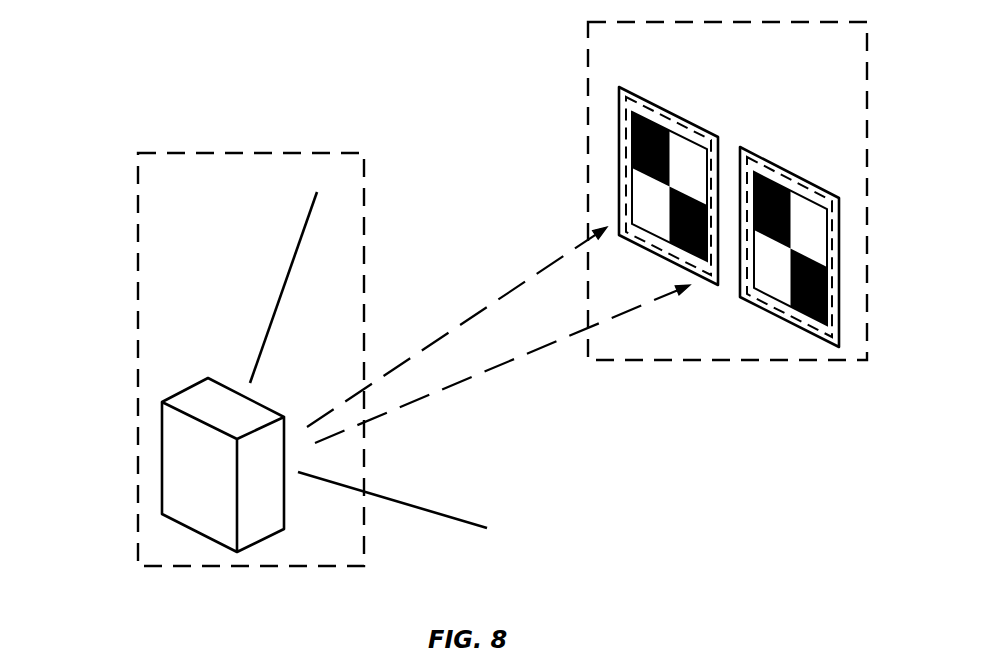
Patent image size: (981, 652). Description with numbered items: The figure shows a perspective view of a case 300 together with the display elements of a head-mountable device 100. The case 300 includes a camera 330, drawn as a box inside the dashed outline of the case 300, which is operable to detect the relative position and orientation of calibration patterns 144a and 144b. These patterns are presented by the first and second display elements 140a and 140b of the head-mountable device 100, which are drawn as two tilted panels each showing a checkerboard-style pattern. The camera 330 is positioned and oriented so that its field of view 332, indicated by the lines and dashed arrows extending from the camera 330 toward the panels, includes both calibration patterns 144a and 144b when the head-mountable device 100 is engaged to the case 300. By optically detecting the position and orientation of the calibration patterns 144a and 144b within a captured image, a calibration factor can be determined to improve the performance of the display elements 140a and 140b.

The head-mountable device 100 is at (710, 360).
The first display element 140a is at (685, 159).
The second display element 140b is at (827, 220).
The calibration pattern 144a is at (682, 173).
The calibration pattern 144b is at (815, 223).
The case 300 is at (138, 223).
The camera 330 is at (175, 390).
The field of view 332 is at (298, 243).